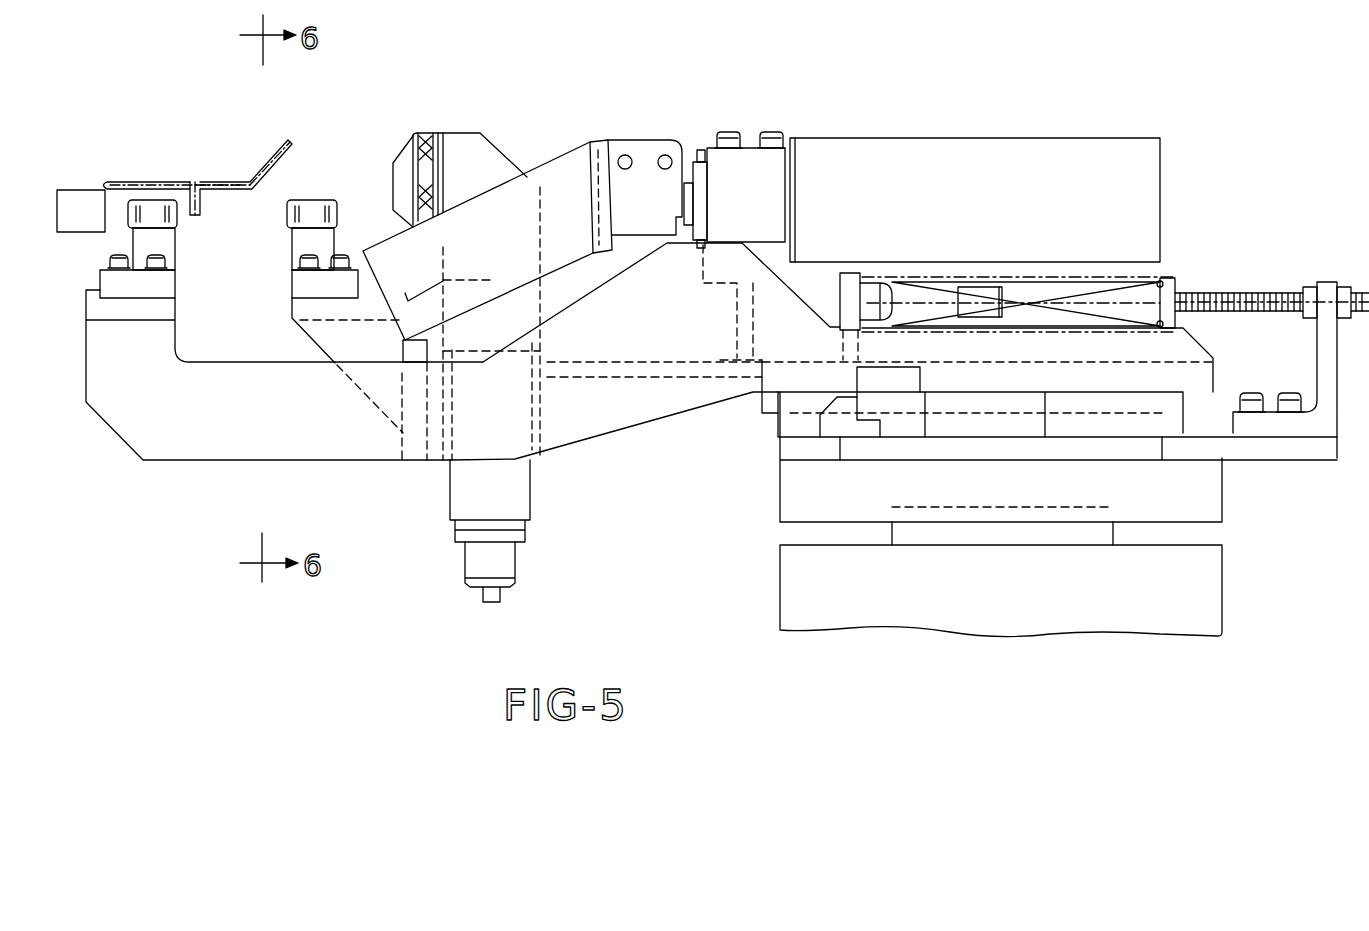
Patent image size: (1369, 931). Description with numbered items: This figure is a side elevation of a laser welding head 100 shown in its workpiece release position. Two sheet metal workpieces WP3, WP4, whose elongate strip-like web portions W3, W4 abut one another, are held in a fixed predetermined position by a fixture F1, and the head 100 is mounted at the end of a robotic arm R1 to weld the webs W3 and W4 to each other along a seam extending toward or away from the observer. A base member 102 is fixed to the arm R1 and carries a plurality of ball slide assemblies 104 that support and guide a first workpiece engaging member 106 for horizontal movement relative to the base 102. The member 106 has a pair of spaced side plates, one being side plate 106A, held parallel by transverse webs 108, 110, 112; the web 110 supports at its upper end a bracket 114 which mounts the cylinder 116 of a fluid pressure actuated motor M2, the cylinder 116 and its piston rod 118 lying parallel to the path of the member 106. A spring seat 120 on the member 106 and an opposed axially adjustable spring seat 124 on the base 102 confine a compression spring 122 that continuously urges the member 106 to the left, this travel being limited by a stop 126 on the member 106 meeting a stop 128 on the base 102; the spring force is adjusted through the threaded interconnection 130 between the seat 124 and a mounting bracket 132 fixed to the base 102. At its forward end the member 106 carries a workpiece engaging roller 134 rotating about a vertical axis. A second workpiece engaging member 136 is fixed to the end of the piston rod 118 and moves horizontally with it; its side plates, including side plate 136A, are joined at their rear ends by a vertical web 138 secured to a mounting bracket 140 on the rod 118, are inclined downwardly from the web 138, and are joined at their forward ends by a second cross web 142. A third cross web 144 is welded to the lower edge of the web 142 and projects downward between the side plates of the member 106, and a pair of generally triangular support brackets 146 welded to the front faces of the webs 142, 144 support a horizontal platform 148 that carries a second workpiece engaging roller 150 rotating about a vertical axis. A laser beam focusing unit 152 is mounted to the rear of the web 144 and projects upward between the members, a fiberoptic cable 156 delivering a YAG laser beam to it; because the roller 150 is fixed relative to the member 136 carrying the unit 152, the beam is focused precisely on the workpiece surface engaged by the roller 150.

The laser welding head 100 is at (1240, 122).
The base member 102 is at (780, 470).
The ball slide assemblies 104 is at (790, 425).
The first workpiece engaging member 106 is at (590, 425).
The side plate 106A is at (661, 302).
The web 108 is at (642, 362).
The web 110 is at (750, 313).
The web 112 is at (122, 322).
The bracket 114 is at (746, 187).
The cylinder 116 is at (990, 113).
The piston rod 118 is at (688, 180).
The spring seat 120 is at (850, 273).
The compression spring 122 is at (992, 277).
The spring seat 124 is at (1180, 284).
The stop 126 is at (880, 413).
The stop 128 is at (862, 430).
The threaded interconnection 130 is at (1262, 295).
The mounting bracket 132 is at (1318, 352).
The workpiece engaging roller 134 is at (128, 224).
The second workpiece engaging member 136 is at (540, 140).
The side plate 136A is at (478, 241).
The web 138 is at (605, 144).
The mounting bracket 140 is at (645, 187).
The second cross web 142 is at (451, 295).
The third cross web 144 is at (400, 380).
The wedge 146 is at (305, 334).
The horizontal platform 148 is at (292, 288).
The workpiece engaging roller 150 is at (318, 200).
The laser beam focusing unit 152 is at (465, 480).
The fiberoptic cable 156 is at (485, 598).
The robotic arm R1 is at (775, 585).
The fluid pressure actuated motor M2 is at (882, 78).
The fixture F1 is at (81, 211).
The sheet metal workpiece WP3 is at (275, 158).
The sheet metal workpiece WP4 is at (137, 182).
The web portion W3 is at (204, 203).
The web portion W4 is at (192, 218).